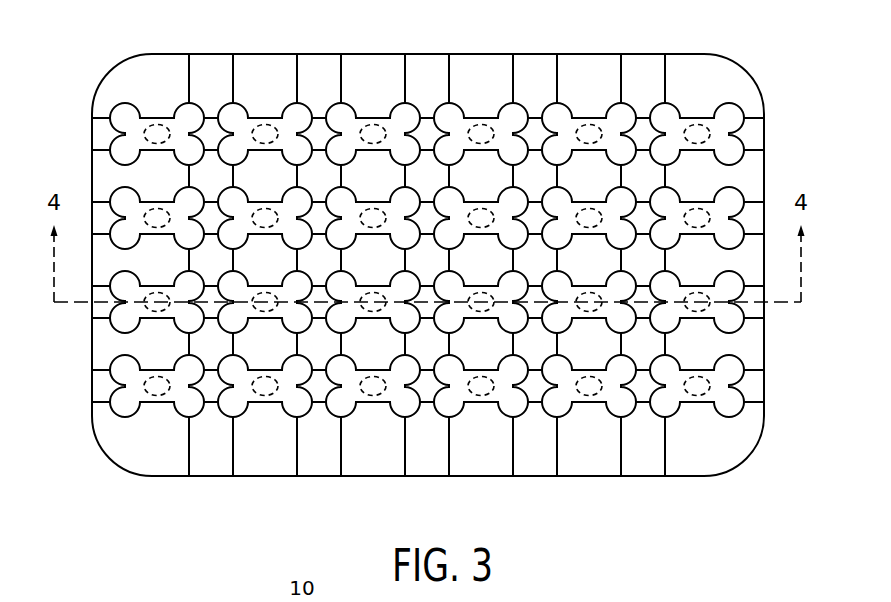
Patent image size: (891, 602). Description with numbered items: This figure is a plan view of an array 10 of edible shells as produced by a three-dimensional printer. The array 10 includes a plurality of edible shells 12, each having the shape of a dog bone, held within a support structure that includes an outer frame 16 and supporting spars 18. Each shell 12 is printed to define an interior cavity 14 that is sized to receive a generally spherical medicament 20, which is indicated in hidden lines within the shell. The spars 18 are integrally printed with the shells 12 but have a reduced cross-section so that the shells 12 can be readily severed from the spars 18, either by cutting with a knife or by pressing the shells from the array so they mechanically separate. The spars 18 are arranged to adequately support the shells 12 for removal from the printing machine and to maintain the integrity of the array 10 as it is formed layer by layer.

The array 10 is at (776, 380).
The edible shell 12 is at (562, 410).
The interior cavity 14 is at (594, 413).
The outer frame 16 is at (344, 487).
The supporting spars 18 is at (208, 404).
The spherical medicament 20 is at (697, 396).